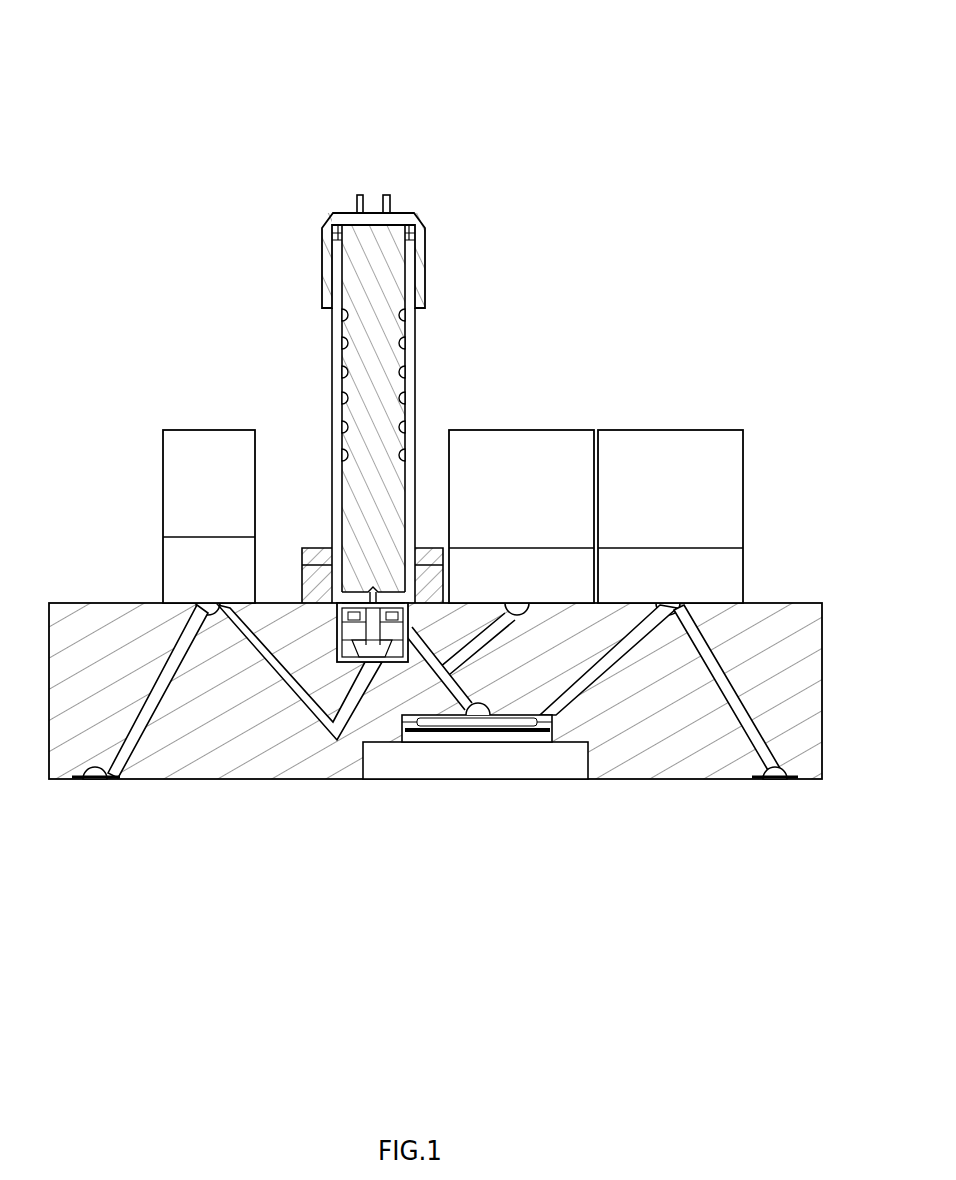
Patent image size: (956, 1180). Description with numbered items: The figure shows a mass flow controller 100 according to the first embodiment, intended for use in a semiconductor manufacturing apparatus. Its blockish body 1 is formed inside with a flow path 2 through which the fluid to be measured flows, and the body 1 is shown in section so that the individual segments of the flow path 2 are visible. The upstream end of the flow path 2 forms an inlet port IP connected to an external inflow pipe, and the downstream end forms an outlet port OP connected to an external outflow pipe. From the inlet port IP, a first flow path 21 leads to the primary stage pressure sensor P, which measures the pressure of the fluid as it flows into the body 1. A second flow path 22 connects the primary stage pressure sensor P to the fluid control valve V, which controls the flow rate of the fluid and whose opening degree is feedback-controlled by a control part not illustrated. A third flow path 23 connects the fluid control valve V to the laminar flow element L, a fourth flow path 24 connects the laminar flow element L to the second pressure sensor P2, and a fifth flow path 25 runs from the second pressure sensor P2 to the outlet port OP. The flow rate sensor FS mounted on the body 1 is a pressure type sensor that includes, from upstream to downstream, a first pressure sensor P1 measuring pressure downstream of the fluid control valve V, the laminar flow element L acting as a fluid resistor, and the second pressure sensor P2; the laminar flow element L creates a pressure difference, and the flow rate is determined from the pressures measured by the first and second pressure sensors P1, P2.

The mass flow controller 100 is at (435, 516).
The body 1 is at (268, 780).
The flow path 2 is at (444, 808).
The first flow path 21 is at (163, 683).
The second flow path 22 is at (335, 742).
The third flow path 23 is at (428, 662).
The fourth flow path 24 is at (608, 653).
The fifth flow path 25 is at (725, 767).
The inlet port IP is at (95, 790).
The outlet port OP is at (775, 790).
The laminar flow element L is at (502, 728).
The fluid control valve V is at (447, 337).
The primary stage pressure sensor P is at (210, 428).
The flow rate sensor FS is at (600, 440).
The first pressure sensor P1 is at (523, 428).
The second pressure sensor P2 is at (622, 428).